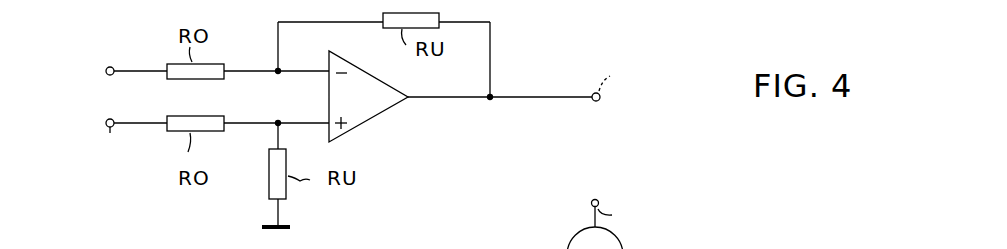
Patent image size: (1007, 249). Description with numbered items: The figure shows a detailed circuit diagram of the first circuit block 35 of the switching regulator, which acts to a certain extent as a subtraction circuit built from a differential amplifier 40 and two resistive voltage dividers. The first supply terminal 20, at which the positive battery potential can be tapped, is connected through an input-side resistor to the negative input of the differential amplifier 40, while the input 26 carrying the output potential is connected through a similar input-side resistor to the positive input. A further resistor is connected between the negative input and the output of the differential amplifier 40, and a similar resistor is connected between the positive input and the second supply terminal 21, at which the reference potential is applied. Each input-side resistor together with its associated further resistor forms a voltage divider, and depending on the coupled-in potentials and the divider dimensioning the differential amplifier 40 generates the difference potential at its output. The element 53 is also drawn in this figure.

The first supply terminal 20 is at (106, 56).
The input 26 is at (99, 149).
The differential amplifier 40 is at (370, 118).
The second supply terminal 21 is at (285, 218).
The first circuit block 35 is at (598, 30).
The VDD supply component 53 is at (626, 243).